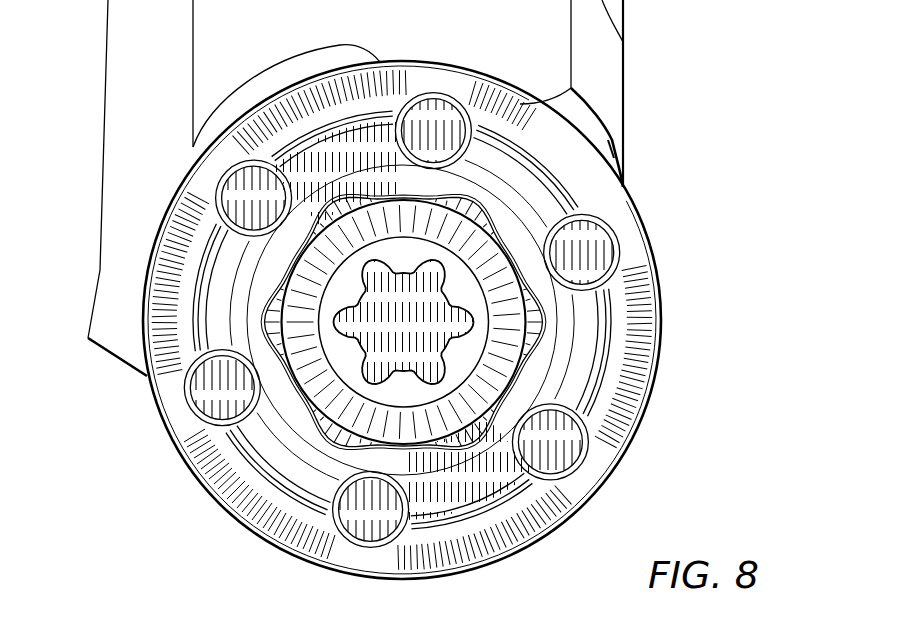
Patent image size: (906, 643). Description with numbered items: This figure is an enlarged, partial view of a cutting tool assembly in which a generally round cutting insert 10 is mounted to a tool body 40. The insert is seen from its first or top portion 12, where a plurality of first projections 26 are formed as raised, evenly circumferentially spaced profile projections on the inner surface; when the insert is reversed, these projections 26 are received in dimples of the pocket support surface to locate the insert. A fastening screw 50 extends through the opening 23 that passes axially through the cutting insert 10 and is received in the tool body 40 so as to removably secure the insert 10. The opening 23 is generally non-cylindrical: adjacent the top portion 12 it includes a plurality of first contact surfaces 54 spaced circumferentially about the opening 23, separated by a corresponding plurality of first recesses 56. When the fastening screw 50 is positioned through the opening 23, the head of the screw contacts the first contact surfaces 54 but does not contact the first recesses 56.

The cutting insert 10 is at (704, 218).
The first or top portion 12 is at (160, 222).
The opening 23 is at (546, 294).
The first projections 26 is at (442, 116).
The tool body 40 is at (625, 22).
The fastening screw 50 is at (535, 140).
The first contact surfaces 54 is at (476, 198).
The first recesses 56 is at (350, 150).